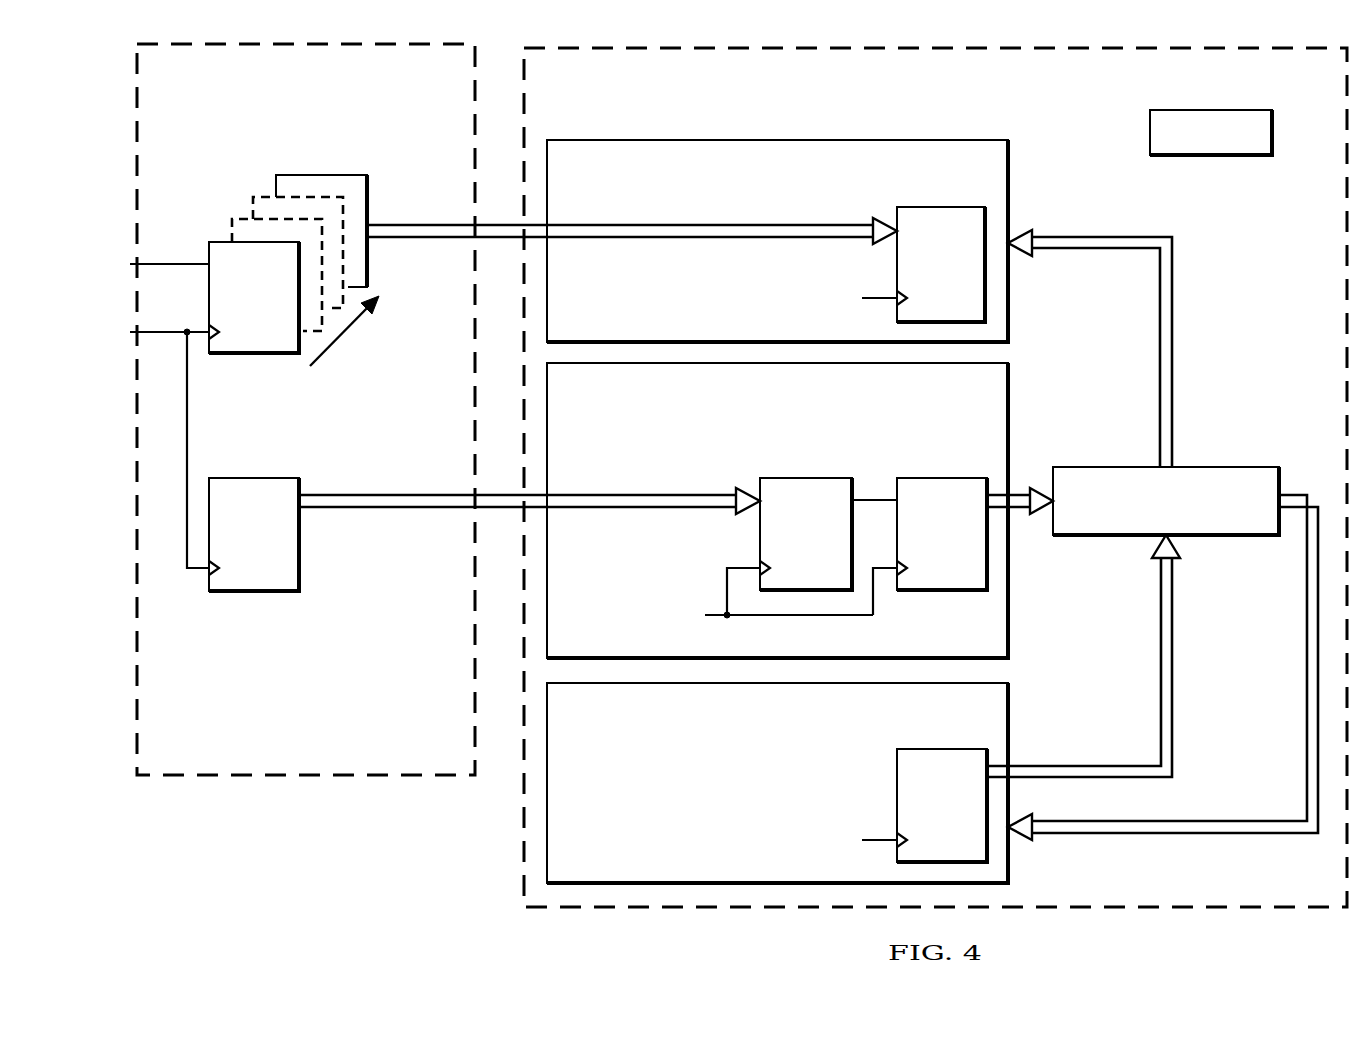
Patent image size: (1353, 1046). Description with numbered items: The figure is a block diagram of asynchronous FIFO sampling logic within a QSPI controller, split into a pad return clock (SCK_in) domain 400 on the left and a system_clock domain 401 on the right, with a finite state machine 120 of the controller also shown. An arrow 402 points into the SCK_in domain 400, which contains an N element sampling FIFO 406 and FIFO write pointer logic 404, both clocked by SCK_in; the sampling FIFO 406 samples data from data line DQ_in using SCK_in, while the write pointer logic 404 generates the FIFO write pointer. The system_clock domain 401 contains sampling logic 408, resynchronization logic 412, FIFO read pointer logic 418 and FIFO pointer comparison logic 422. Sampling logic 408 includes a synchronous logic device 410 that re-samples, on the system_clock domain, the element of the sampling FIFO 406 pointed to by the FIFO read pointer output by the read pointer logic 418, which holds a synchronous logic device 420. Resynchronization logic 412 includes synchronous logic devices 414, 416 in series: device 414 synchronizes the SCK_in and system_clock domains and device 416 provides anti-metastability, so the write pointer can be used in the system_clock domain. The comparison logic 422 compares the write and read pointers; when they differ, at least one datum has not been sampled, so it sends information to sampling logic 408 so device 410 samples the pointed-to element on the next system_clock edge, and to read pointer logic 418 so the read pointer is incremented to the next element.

The pad return clock (SCK_in) domain 400 is at (343, 128).
The system_clock domain 401 is at (953, 129).
The SCK_in domain circuitry 402 is at (203, 126).
The FIFO write pointer logic 404 is at (300, 545).
The N element sampling FIFO 406 is at (251, 355).
The sampling logic 408 is at (1018, 192).
The synchronous logic device 410 is at (940, 205).
The resynchronization logic 412 is at (1018, 430).
The synchronous logic device 414 is at (800, 476).
The synchronous logic device 416 is at (940, 476).
The FIFO read pointer logic 418 is at (1018, 710).
The read pointer flip-flop 420 is at (942, 805).
The FIFO pointer comparison logic 422 is at (1200, 466).
The finite state machine (FSM) 120 is at (1220, 158).